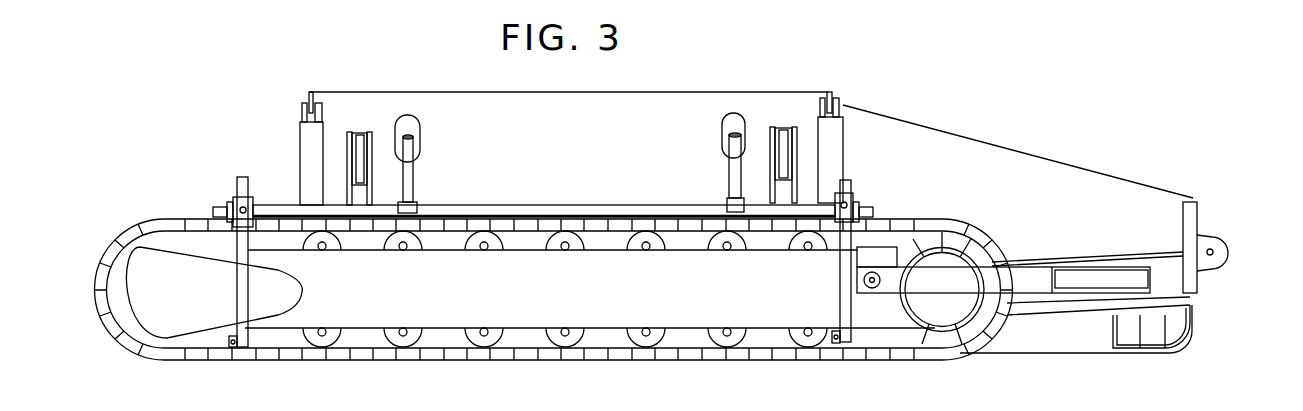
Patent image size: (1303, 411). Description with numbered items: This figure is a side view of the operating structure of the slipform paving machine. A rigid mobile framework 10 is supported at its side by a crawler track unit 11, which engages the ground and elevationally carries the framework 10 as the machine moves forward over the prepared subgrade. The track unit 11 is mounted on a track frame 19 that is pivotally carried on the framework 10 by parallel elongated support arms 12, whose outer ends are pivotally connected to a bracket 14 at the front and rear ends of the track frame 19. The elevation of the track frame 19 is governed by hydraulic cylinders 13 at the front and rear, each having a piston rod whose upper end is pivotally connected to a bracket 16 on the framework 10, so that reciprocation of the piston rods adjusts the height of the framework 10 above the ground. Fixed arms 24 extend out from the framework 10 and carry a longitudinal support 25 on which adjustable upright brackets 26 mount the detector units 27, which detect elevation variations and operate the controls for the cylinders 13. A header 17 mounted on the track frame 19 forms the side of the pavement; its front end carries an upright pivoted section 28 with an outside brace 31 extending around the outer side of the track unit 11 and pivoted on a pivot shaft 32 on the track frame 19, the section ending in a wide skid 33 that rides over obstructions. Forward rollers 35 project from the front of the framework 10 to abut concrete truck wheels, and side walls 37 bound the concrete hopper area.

The rigid mobile framework 10 is at (266, 138).
The crawler track unit 11 is at (155, 210).
The elongated support arm 12 is at (361, 134).
The hydraulic cylinder 13 is at (320, 160).
The bracket 14 is at (349, 172).
The bracket 16 is at (308, 99).
The header 17 is at (1030, 255).
The track frame 19 is at (540, 301).
The fixed arm 24 is at (416, 176).
The longitudinal support 25 is at (560, 206).
The adjustable upright bracket 26 is at (246, 284).
The detector unit 27 is at (228, 343).
The pivoted section 28 is at (1078, 340).
The outside brace 31 is at (1005, 285).
The pivot shaft 32 is at (881, 280).
The wide skid 33 is at (1190, 340).
The forward roller 35 is at (1224, 245).
The side wall 37 is at (982, 183).